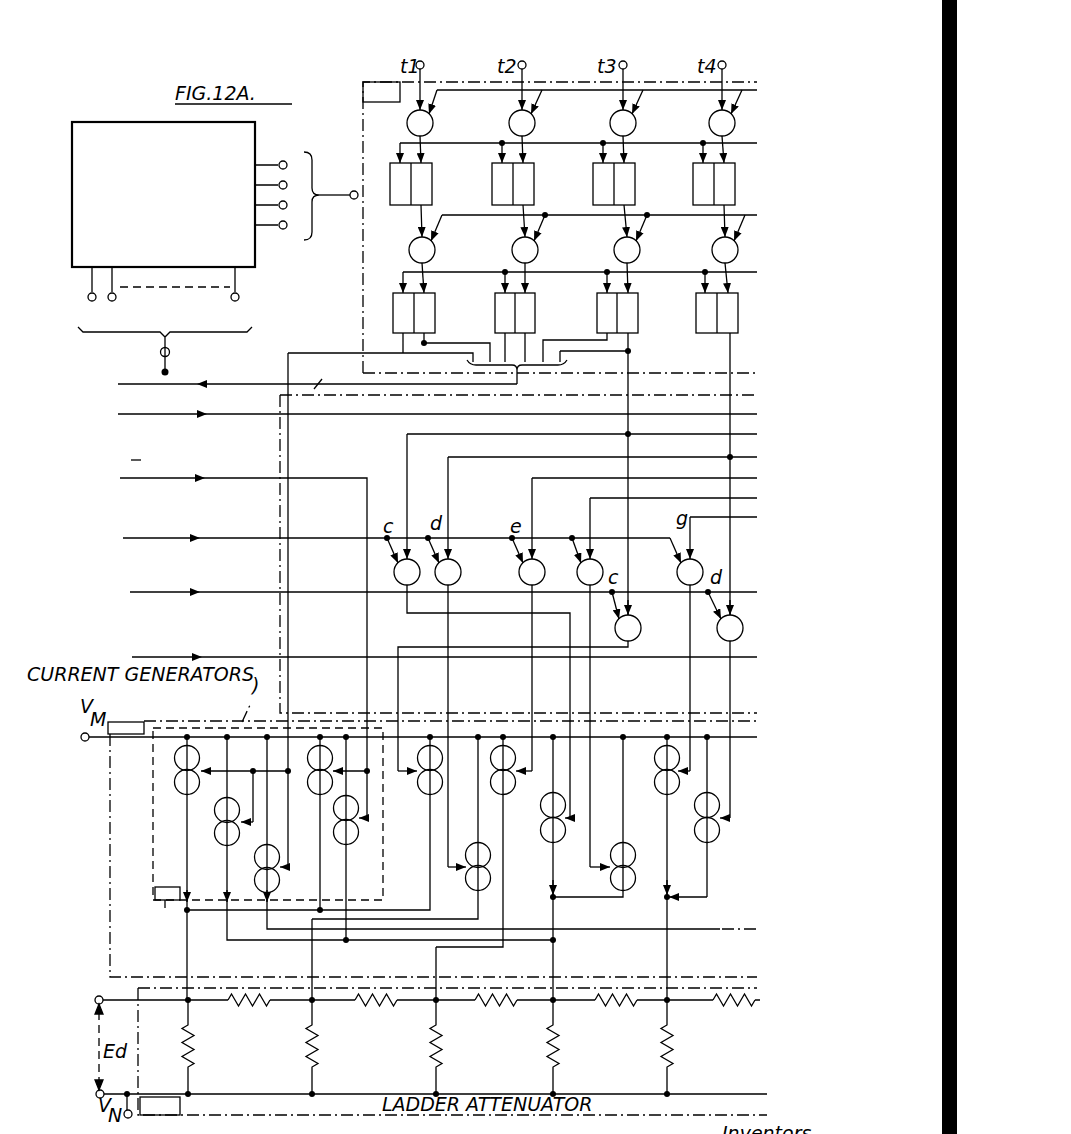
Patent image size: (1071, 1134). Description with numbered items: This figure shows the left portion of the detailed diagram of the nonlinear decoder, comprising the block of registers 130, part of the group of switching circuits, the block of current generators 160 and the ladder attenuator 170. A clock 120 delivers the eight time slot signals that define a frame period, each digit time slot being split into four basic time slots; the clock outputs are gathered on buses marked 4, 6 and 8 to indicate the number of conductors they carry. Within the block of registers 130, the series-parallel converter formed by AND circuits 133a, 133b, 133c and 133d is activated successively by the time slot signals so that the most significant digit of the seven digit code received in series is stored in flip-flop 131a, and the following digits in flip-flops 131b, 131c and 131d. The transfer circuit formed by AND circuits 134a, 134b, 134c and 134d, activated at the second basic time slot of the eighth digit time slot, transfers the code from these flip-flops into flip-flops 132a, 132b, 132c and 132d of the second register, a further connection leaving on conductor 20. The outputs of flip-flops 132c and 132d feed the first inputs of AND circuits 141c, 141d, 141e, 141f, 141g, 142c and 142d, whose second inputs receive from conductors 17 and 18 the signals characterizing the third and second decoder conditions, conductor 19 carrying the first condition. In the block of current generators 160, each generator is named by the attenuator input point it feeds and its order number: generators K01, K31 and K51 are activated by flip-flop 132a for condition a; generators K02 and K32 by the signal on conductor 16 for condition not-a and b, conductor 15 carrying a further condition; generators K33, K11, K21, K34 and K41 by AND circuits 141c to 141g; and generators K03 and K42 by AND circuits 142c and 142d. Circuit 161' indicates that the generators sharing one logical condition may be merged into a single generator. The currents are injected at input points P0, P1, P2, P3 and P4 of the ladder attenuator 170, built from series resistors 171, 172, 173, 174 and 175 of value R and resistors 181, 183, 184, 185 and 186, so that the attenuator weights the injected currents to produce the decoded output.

The clock 120 is at (188, 213).
The block of registers 130 is at (560, 227).
The four-line bus 4 is at (319, 196).
The six-line bus 6 is at (336, 286).
The eight-line bus 8 is at (165, 351).
The AND circuit of the series-parallel converter 133a is at (401, 116).
The AND circuit of the series-parallel converter 133b is at (505, 116).
The AND circuit of the series-parallel converter 133c is at (606, 116).
The AND circuit of the series-parallel converter 133d is at (705, 116).
The flip-flop of register 131 131a is at (391, 174).
The flip-flop of register 131 131b is at (492, 174).
The flip-flop of register 131 131c is at (593, 174).
The flip-flop of register 131 131d is at (693, 174).
The AND circuit of the transfer circuit 134a is at (403, 249).
The AND circuit of the transfer circuit 134b is at (506, 249).
The AND circuit of the transfer circuit 134c is at (608, 249).
The AND circuit of the transfer circuit 134d is at (706, 249).
The flip-flop of register 132 132a is at (391, 302).
The flip-flop of register 132 132b is at (490, 302).
The flip-flop of register 132 132c is at (591, 302).
The flip-flop of register 132 132d is at (691, 302).
The output line 20 is at (317, 372).
The conductor 15 is at (437, 406).
The conductor 16 is at (245, 636).
The conductor 17 is at (402, 539).
The conductor 18 is at (443, 594).
The conductor 19 is at (444, 644).
The AND circuit 141c is at (465, 626).
The AND circuit 141d is at (473, 662).
The AND circuit 141e is at (510, 624).
The AND circuit 141f is at (575, 682).
The AND circuit 141g is at (668, 644).
The AND circuit 142c is at (542, 685).
The AND circuit 142d is at (728, 626).
The block of current generators 160 is at (130, 723).
The circuit 161' is at (263, 831).
The current generator K01 is at (166, 868).
The current generator K02 is at (384, 838).
The current generator K03 is at (315, 823).
The current generator K11 is at (401, 868).
The current generator K21 is at (490, 868).
The current generator K31 is at (263, 823).
The current generator K32 is at (358, 838).
The current generator K33 is at (539, 868).
The current generator K34 is at (594, 819).
The current generator K41 is at (654, 868).
The current generator K42 is at (711, 817).
The current generator K51 is at (272, 877).
The ladder attenuator 170 is at (452, 1052).
The resistor 171 is at (249, 1009).
The resistor 172 is at (376, 1010).
The resistor 173 is at (496, 1010).
The resistor 174 is at (615, 1011).
The resistor 175 is at (734, 1010).
The resistor 181 is at (210, 1047).
The resistor 183 is at (293, 1047).
The resistor 184 is at (417, 1047).
The resistor 185 is at (533, 1047).
The resistor 186 is at (648, 1047).
The input point of the attenuator P0 is at (172, 1047).
The input point of the attenuator P1 is at (295, 1047).
The input point of the attenuator P2 is at (422, 1047).
The input point of the attenuator P3 is at (540, 1047).
The input point of the attenuator P4 is at (654, 1047).